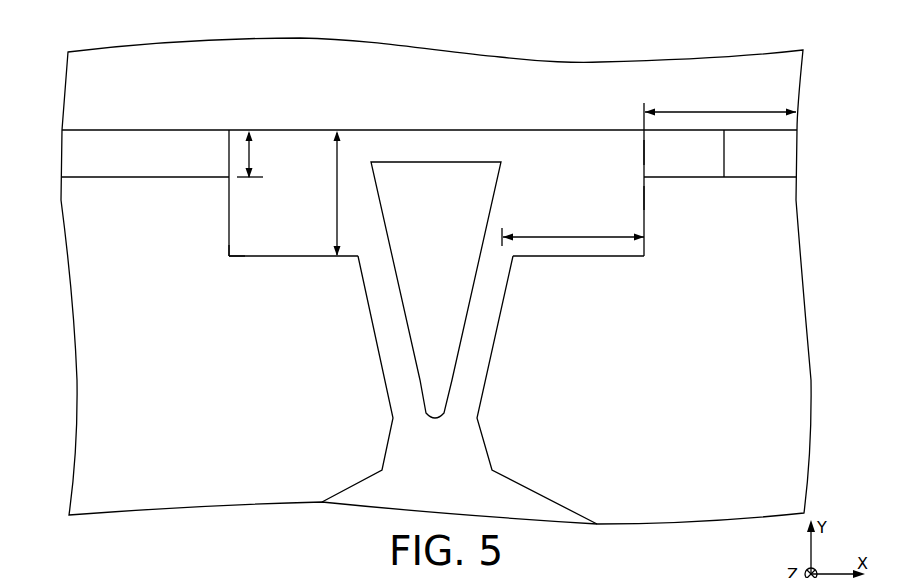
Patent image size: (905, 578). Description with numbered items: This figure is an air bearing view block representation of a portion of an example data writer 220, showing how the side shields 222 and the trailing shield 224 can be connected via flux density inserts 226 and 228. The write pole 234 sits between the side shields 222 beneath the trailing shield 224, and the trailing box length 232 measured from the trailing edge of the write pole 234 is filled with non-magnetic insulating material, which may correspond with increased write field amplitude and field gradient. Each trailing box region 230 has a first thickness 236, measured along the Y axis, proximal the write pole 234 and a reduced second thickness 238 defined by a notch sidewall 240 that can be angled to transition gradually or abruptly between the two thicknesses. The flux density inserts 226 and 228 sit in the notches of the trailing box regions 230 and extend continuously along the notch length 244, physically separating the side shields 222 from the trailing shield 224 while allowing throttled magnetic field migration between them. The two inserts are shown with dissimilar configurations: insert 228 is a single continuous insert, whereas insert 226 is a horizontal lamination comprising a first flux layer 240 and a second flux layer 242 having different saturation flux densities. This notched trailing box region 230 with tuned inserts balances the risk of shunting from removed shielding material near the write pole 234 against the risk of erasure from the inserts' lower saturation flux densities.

The data writer 220 is at (122, 36).
The side shield 222 is at (110, 202).
The trailing shield 224 is at (110, 102).
The flux density insert 226 is at (641, 152).
The flux density insert 228 is at (164, 166).
The trailing box region 230 is at (226, 258).
The trailing box length 232 is at (573, 231).
The write pole 234 is at (452, 186).
The first thickness 236 is at (319, 193).
The second thickness 238 is at (264, 154).
The first flux layer 240 is at (700, 163).
The second flux layer 242 is at (780, 163).
The notch length 244 is at (720, 109).